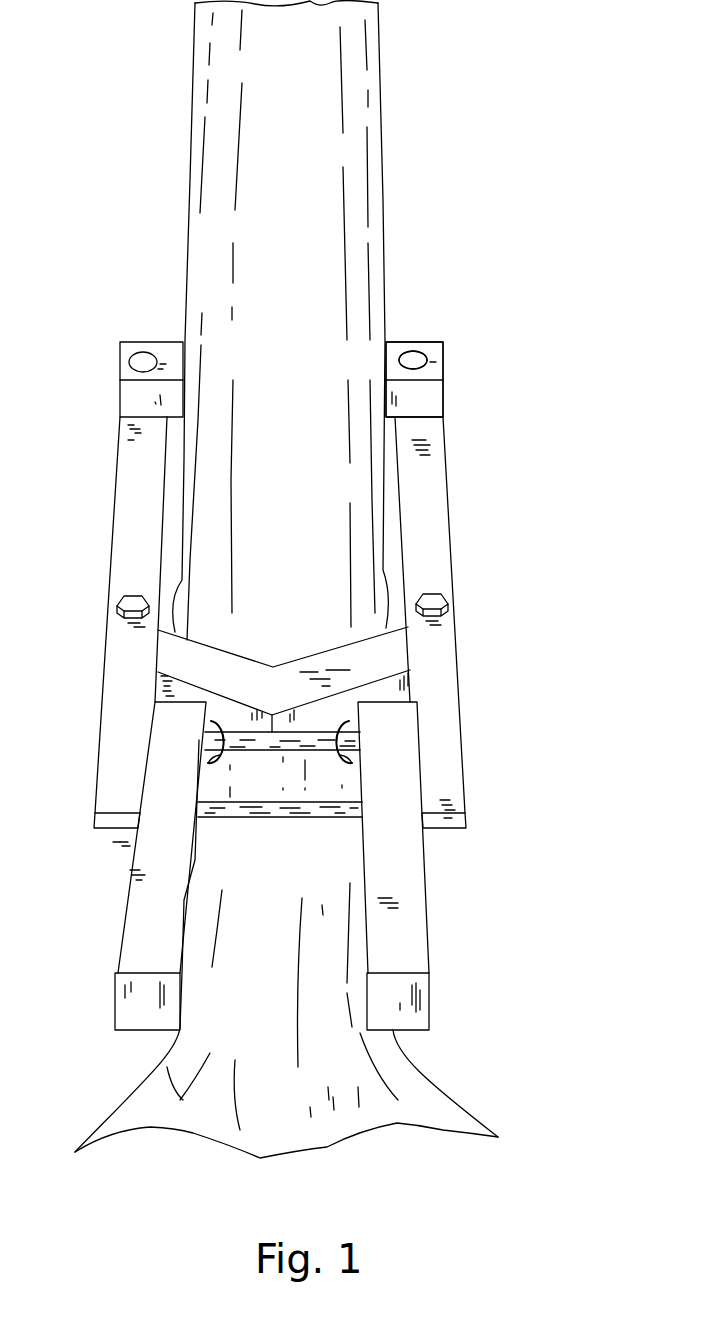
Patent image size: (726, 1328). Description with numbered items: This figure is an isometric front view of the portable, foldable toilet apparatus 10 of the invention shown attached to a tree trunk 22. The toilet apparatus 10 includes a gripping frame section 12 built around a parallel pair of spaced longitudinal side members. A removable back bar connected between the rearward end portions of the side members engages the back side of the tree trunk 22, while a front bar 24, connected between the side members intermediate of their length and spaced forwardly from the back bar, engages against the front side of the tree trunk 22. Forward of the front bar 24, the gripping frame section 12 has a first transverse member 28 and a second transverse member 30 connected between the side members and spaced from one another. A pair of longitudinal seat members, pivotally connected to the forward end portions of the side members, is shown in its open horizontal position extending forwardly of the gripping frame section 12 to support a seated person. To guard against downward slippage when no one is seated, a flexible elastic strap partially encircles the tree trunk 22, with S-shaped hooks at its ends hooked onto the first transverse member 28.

The portable, foldable toilet apparatus 10 is at (304, 661).
The gripping frame section 12 is at (111, 569).
The tree trunk 22 is at (358, 205).
The front bar 24 is at (223, 668).
The first transverse member 28 is at (262, 757).
The second transverse member 30 is at (290, 818).